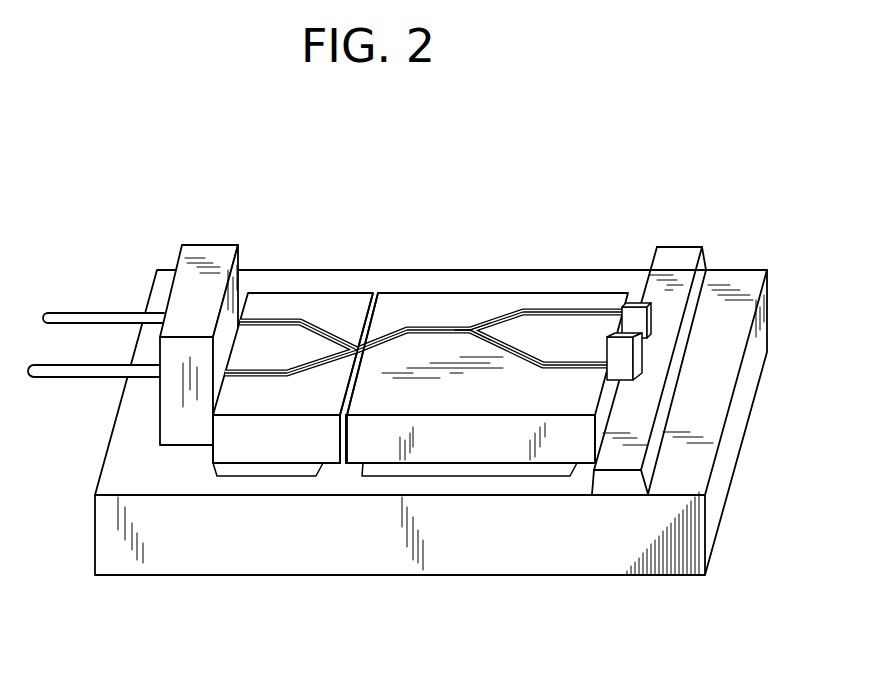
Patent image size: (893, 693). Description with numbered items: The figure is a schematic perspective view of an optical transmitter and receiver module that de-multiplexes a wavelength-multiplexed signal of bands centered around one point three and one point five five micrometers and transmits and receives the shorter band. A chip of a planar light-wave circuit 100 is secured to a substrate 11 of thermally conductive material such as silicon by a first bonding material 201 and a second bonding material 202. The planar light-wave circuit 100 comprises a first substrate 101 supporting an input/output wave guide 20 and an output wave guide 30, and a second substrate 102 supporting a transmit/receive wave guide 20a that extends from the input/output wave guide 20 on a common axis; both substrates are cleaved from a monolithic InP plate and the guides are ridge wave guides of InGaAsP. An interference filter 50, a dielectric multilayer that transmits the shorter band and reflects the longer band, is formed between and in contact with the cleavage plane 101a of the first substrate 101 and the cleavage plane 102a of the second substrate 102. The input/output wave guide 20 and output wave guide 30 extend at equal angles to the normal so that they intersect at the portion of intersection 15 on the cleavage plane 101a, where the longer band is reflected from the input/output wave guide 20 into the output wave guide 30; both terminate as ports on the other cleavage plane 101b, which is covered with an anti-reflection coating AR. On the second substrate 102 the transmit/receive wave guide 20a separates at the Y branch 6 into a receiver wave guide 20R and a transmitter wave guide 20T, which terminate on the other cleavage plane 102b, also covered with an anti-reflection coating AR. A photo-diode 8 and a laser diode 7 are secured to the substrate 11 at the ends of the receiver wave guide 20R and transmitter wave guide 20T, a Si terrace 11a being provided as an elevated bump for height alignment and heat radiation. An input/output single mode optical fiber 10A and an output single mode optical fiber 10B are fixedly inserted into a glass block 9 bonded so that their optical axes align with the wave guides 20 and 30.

The planar light-wave circuit 100 is at (429, 390).
The substrate 11 is at (723, 472).
The Si terrace 11a is at (623, 480).
The glass block 9 is at (210, 252).
The input/output single mode optical fiber 10A is at (78, 378).
The output single mode optical fiber 10B is at (105, 312).
The first substrate 101 is at (280, 300).
The second substrate 102 is at (430, 310).
The cleavage plane 101a is at (333, 418).
The cleavage plane 101b is at (252, 298).
The cleavage plane 102a is at (361, 380).
The cleavage plane 102b is at (593, 433).
The portion of intersection 15 is at (357, 331).
The interference filter 50 is at (372, 295).
The input/output wave guide 20 is at (422, 400).
The output wave guide 30 is at (290, 315).
The transmit/receive wave guide 20a is at (410, 345).
The transmitter wave guide 20T is at (558, 308).
The receiver wave guide 20R is at (513, 355).
The Y branch 6 is at (478, 328).
The laser diode 7 is at (633, 306).
The photo-diode 8 is at (640, 357).
The first bonding material 201 is at (495, 470).
The second bonding material 202 is at (292, 470).
The anti-reflection coating AR is at (608, 403).